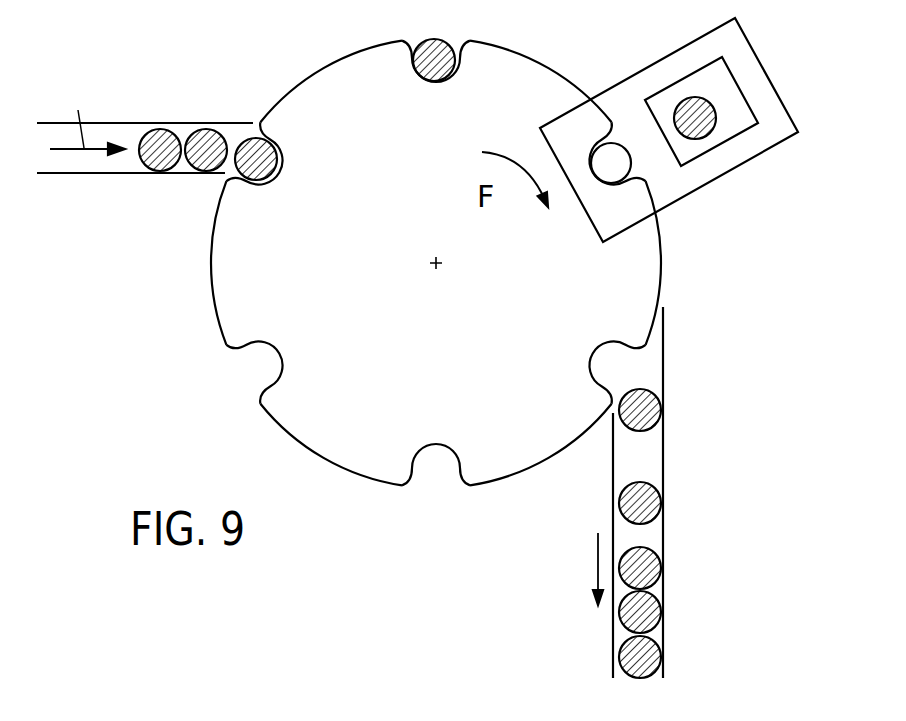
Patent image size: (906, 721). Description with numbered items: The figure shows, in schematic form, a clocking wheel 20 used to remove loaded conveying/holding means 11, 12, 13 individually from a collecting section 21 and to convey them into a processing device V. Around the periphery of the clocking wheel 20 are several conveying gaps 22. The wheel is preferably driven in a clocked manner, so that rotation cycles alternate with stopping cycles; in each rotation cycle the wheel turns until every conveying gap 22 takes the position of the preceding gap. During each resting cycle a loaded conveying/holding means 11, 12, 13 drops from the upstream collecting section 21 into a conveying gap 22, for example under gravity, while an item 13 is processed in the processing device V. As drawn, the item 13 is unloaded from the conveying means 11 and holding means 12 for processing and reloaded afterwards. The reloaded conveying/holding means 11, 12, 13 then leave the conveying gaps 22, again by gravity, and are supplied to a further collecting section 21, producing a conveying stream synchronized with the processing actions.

The conveying means 11 is at (464, 358).
The holding means 12 is at (464, 358).
The item 13 is at (240, 150).
The clocking wheel 20 is at (453, 352).
The collecting section 21 is at (143, 190).
The conveying gap 22 is at (280, 180).
The processing device V is at (630, 97).